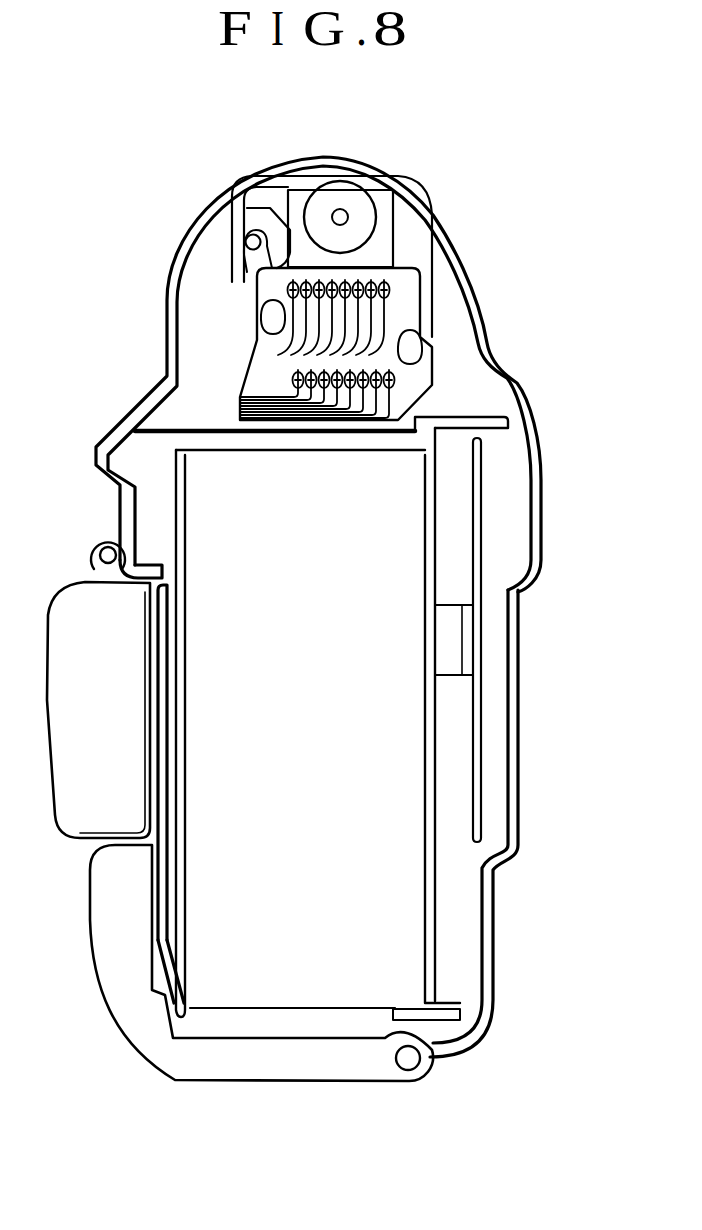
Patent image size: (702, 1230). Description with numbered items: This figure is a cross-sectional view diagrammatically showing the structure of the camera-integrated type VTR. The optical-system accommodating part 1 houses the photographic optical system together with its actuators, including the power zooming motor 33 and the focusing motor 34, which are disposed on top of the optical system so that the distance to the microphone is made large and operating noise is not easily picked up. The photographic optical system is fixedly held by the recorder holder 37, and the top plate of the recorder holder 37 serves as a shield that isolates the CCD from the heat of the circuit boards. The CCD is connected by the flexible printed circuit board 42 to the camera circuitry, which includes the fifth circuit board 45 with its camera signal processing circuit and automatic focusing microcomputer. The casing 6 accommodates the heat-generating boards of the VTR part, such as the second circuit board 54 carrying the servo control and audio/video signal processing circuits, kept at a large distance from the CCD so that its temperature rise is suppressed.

The optical-system accommodating part 1 is at (462, 253).
The casing 6 is at (510, 712).
The power zooming motor 33 is at (247, 247).
The focusing motor 34 is at (363, 217).
The recorder holder 37 is at (490, 412).
The flexible printed circuit board 42 is at (413, 313).
The fifth circuit board 45 is at (480, 503).
The second circuit board 54 is at (433, 925).